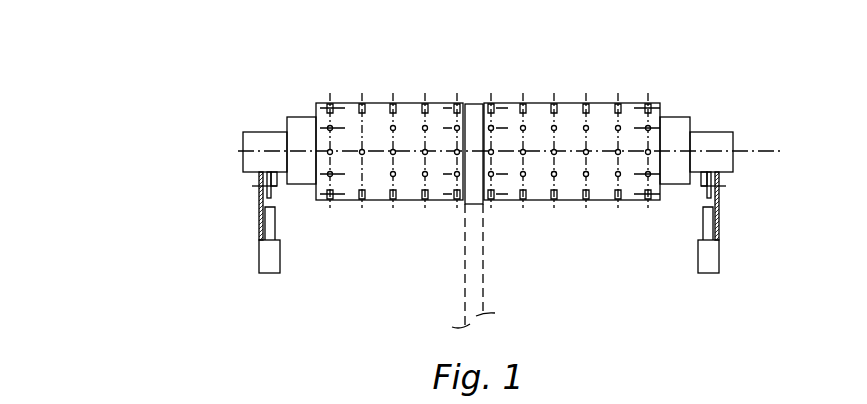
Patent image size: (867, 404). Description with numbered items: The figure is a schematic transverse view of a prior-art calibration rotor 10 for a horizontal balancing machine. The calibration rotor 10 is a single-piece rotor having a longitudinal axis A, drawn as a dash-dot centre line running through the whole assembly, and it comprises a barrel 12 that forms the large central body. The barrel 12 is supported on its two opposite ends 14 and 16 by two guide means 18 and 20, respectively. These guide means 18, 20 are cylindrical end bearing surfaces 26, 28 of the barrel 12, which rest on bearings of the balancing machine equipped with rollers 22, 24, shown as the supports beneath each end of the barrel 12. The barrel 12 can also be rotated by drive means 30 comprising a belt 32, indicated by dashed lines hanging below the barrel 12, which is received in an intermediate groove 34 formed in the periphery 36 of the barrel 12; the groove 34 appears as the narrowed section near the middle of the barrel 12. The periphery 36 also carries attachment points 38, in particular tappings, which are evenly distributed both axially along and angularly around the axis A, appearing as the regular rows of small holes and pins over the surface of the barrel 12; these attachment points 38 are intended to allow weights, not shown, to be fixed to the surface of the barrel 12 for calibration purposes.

The calibration rotor 10 is at (433, 71).
The barrel 12 is at (488, 170).
The first end of the barrel 14 is at (243, 142).
The second end of the barrel 16 is at (734, 142).
The first guide means 18 is at (245, 181).
The second guide means 20 is at (733, 181).
The first rollers 22 is at (271, 196).
The second rollers 24 is at (707, 196).
The first cylindrical end bearing surface 26 is at (256, 158).
The second cylindrical end bearing surface 28 is at (723, 158).
The drive means 30 is at (473, 280).
The belt 32 is at (473, 299).
The intermediate groove 34 is at (500, 131).
The periphery 36 is at (416, 170).
The attachment points 38 is at (586, 177).
The longitudinal axis A is at (780, 150).